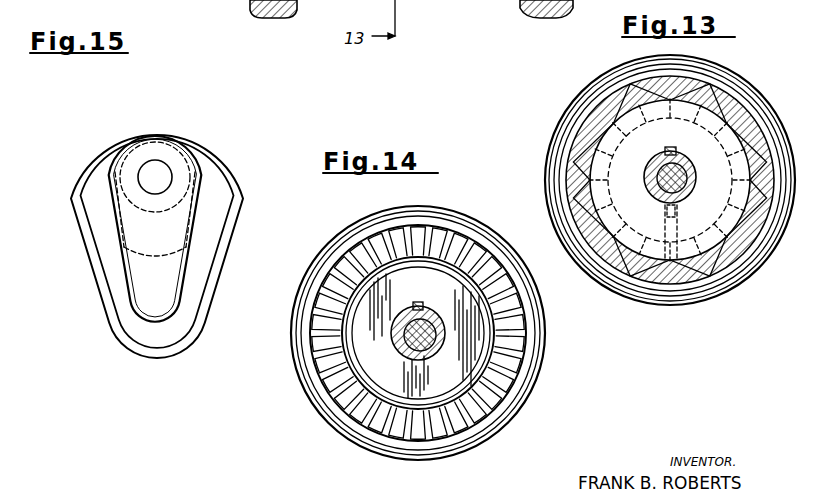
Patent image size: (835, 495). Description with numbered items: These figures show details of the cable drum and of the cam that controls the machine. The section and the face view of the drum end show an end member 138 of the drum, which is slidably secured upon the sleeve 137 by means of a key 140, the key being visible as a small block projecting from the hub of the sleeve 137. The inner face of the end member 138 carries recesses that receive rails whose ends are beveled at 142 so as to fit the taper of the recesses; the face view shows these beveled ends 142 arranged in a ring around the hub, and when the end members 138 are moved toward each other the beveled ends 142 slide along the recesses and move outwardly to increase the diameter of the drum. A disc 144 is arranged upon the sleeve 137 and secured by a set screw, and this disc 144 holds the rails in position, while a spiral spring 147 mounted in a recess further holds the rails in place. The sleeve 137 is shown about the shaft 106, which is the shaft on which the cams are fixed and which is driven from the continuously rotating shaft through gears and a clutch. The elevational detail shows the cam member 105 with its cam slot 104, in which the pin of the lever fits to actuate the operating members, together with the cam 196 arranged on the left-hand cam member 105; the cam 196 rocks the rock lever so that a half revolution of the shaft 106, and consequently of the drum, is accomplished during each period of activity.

In FIG. 15, the cam slot 104 is at (212, 138).
In FIG. 15, the cam member 105 is at (224, 276).
In FIG. 15, the cam 196 is at (121, 243).
In FIG. 14, the end member 138 is at (536, 300).
In FIG. 13, the end member 138 is at (730, 76).
In FIG. 14, the beveled ends 142 is at (490, 281).
In FIG. 13, the disc 144 is at (600, 122).
In FIG. 13, the spiral spring 147 is at (566, 179).
In FIG. 14, the key 140 is at (419, 304).
In FIG. 13, the key 140 is at (665, 151).
In FIG. 14, the sleeve 137 is at (406, 312).
In FIG. 13, the sleeve 137 is at (648, 178).
In FIG. 14, the shaft 106 is at (408, 348).
In FIG. 13, the shaft 106 is at (660, 188).